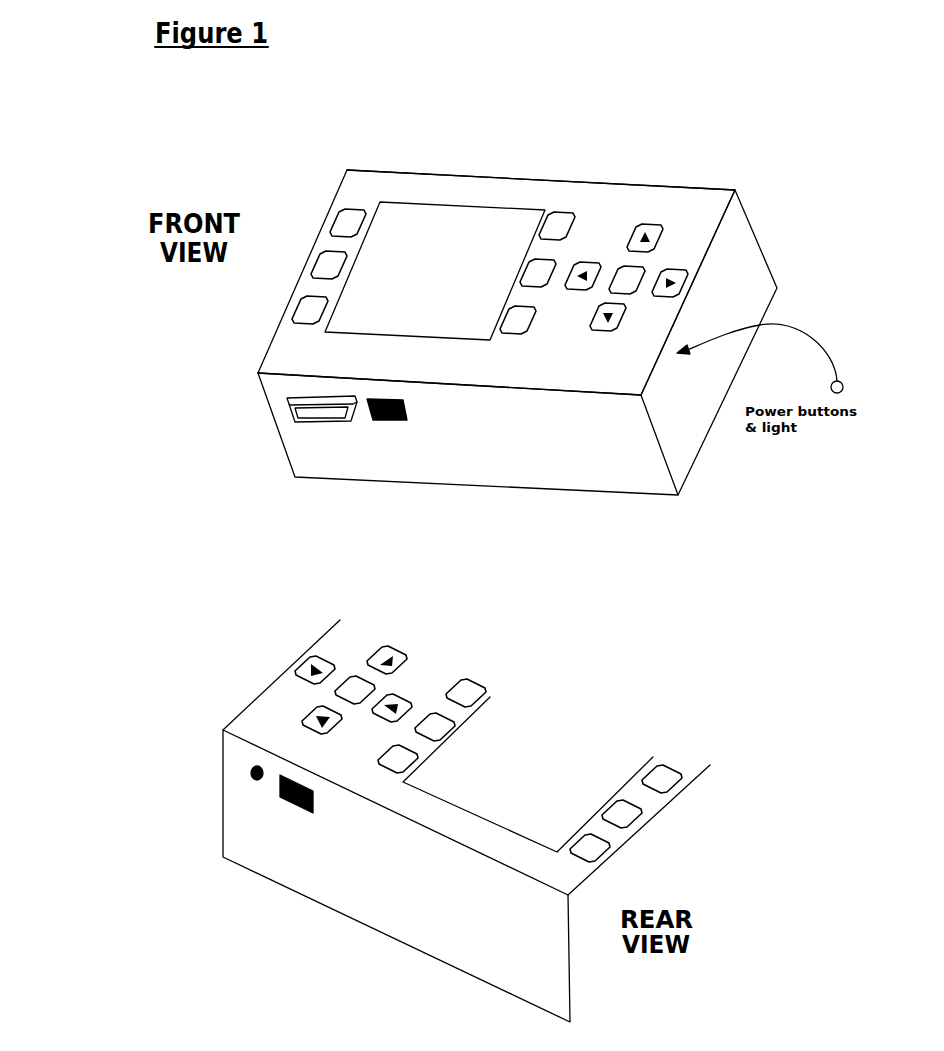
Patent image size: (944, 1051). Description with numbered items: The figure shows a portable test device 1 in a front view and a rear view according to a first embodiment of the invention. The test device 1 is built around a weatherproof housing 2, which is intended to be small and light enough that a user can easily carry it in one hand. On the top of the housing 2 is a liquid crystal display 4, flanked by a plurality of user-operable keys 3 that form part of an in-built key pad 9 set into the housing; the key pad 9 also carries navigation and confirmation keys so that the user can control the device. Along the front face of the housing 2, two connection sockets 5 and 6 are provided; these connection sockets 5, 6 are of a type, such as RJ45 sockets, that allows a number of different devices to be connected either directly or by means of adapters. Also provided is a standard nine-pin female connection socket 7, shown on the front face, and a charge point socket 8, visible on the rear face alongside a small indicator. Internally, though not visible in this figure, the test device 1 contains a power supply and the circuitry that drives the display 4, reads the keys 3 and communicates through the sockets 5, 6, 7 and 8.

The test device 1 is at (205, 175).
The weatherproof housing 2 is at (300, 348).
The user-operable keys 3 is at (680, 271).
The liquid crystal display 4 is at (470, 238).
The connection socket 5 is at (282, 810).
The connection socket 6 is at (428, 407).
The 9-pin female connection socket 7 is at (323, 430).
The charge point socket 8 is at (247, 782).
The key pad 9 is at (687, 217).